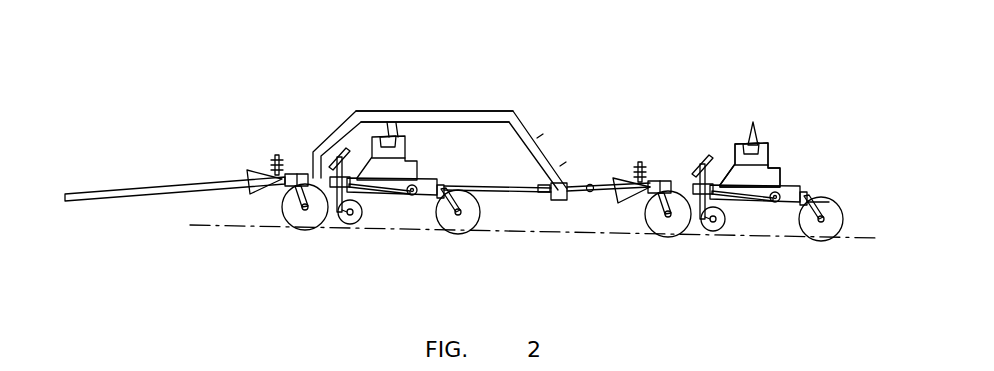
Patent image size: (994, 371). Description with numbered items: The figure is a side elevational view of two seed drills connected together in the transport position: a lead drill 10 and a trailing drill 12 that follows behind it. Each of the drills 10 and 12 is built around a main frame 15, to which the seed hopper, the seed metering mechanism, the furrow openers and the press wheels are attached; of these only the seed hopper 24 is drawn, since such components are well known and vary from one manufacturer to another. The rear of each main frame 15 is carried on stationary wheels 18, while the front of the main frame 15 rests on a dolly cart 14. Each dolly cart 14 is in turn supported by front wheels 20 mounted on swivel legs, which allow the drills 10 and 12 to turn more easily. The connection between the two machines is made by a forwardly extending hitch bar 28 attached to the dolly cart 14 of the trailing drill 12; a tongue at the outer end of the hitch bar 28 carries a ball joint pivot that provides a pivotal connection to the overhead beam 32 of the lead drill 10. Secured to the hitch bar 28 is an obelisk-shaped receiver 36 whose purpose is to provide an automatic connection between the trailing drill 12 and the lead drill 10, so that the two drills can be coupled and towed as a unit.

The lead drill 10 is at (490, 107).
The trailing drill 12 is at (767, 132).
The dolly cart 14 is at (427, 193).
The main frame 15 is at (307, 168).
The stationary wheels 18 is at (478, 213).
The front wheels 20 is at (303, 228).
The seed hopper housing 24 is at (405, 147).
The hitch bar 28 is at (602, 185).
The overhead beam 32 is at (412, 113).
The receiver 36 is at (617, 197).